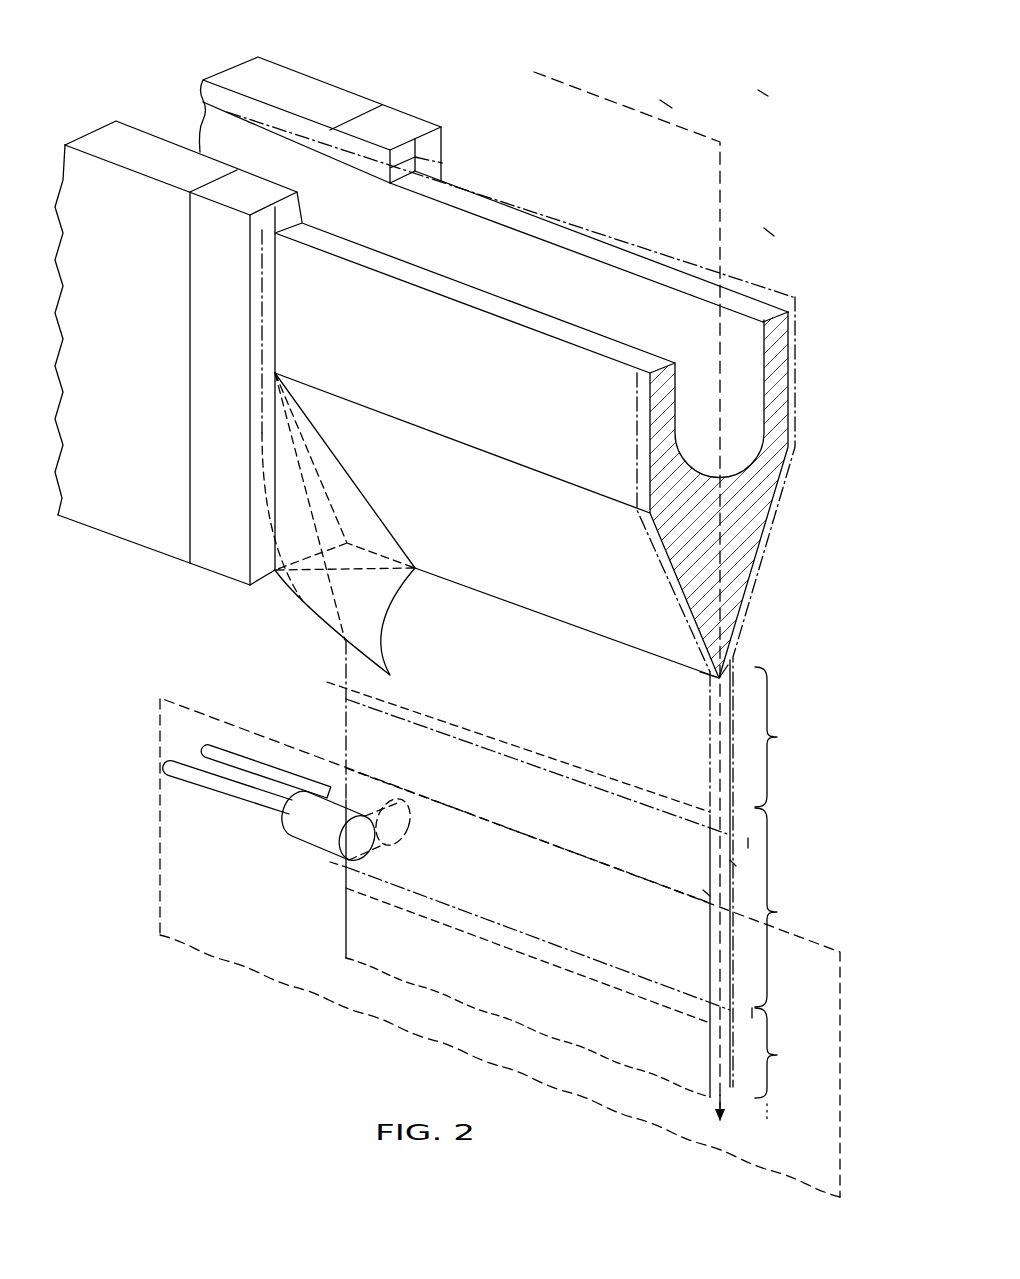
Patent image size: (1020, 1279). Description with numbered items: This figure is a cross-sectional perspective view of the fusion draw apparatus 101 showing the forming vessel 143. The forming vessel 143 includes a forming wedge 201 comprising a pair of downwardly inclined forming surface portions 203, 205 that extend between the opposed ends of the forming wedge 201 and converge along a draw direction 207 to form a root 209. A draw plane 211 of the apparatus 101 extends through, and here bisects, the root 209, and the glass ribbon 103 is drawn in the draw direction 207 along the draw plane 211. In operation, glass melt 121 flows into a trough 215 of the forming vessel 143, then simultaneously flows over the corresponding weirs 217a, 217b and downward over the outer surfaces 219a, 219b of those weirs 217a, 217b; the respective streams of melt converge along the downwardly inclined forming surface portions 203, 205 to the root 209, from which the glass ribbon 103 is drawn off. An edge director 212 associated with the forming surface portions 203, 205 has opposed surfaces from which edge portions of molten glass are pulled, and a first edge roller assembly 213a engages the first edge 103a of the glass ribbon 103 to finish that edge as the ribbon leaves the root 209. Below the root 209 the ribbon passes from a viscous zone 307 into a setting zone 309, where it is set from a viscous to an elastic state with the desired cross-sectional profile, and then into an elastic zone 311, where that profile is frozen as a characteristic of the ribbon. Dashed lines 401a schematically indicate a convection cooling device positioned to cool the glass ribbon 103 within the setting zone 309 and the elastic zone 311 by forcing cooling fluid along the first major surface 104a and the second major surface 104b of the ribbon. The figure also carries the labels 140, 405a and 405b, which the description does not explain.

The fusion draw apparatus 101 is at (668, 105).
The assembly 140 is at (763, 93).
The forming vessel 143 is at (769, 232).
The glass melt 121 is at (287, 130).
The forming wedge 201 is at (638, 600).
The draw plane 211 is at (721, 163).
The weir 217a is at (490, 305).
The weir 217b is at (601, 247).
The outer surface of weir 219a is at (648, 452).
The outer surface of weir 219b is at (793, 345).
The trough 215 is at (760, 379).
The downwardly inclined forming surface portion 205 is at (747, 606).
The downwardly inclined forming surface portion 203 is at (694, 626).
The root 209 is at (695, 675).
The edge director 212 is at (313, 610).
The draw direction 207 is at (716, 1099).
The glass ribbon 103 is at (662, 961).
The first edge of glass ribbon 103a is at (345, 932).
The dashed lines indicating convection cooling device 401a is at (160, 742).
The first edge roller assembly 213a is at (416, 858).
The viscous zone 307 is at (789, 737).
The setting zone 309 is at (789, 907).
The elastic zone 311 is at (791, 1065).
The first edge 405a is at (749, 843).
The second edge 405b is at (752, 1013).
The first major surface of glass ribbon 104a is at (703, 893).
The second major surface of glass ribbon 104b is at (736, 866).